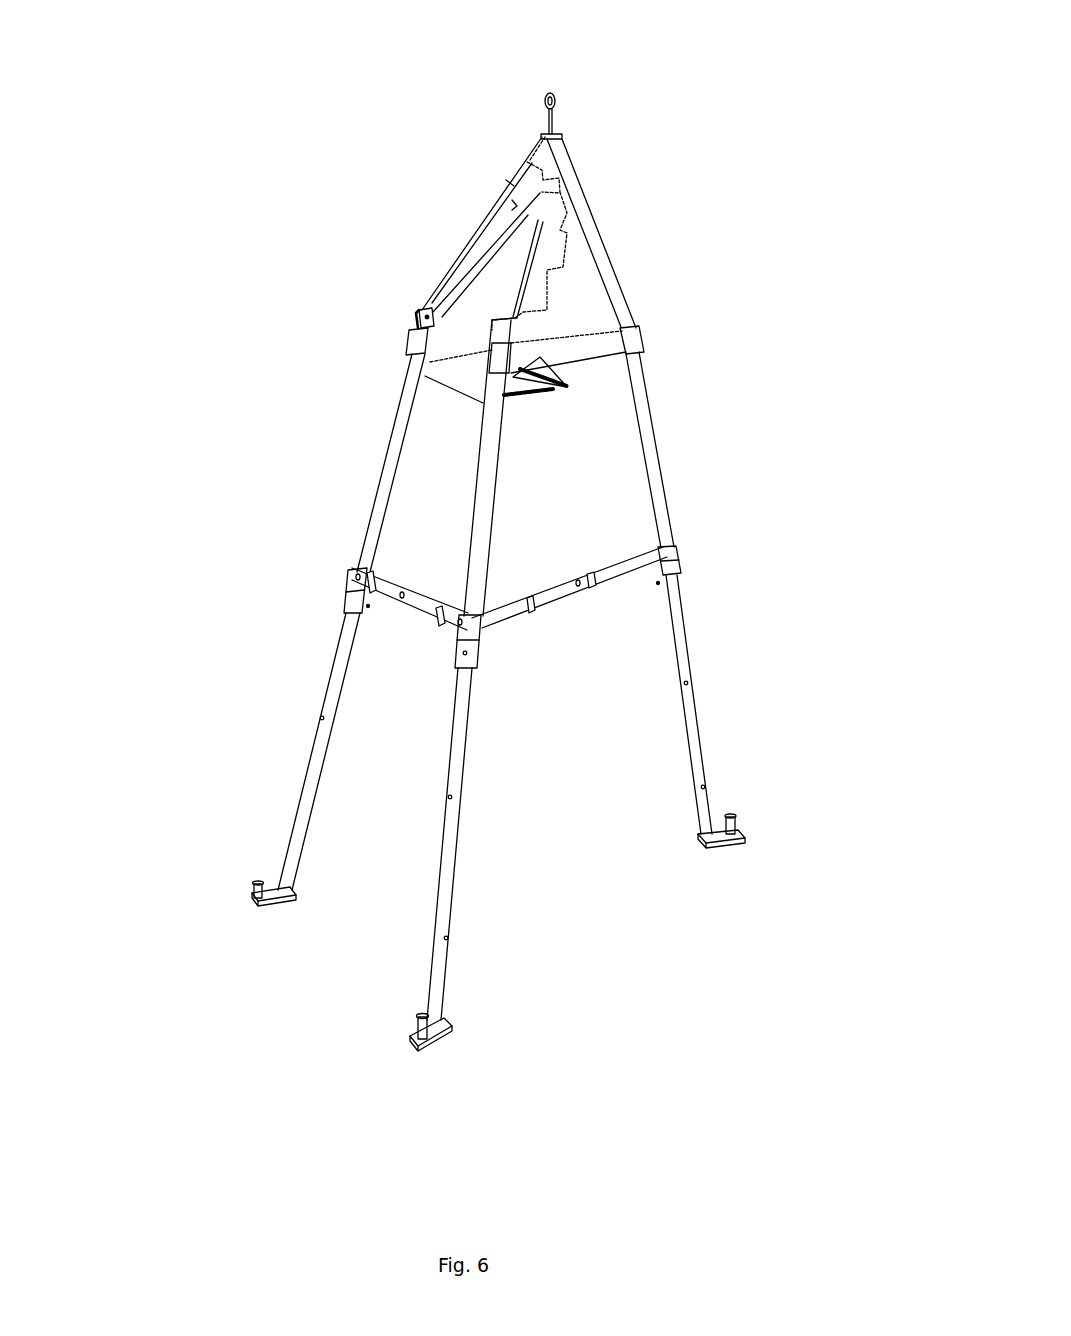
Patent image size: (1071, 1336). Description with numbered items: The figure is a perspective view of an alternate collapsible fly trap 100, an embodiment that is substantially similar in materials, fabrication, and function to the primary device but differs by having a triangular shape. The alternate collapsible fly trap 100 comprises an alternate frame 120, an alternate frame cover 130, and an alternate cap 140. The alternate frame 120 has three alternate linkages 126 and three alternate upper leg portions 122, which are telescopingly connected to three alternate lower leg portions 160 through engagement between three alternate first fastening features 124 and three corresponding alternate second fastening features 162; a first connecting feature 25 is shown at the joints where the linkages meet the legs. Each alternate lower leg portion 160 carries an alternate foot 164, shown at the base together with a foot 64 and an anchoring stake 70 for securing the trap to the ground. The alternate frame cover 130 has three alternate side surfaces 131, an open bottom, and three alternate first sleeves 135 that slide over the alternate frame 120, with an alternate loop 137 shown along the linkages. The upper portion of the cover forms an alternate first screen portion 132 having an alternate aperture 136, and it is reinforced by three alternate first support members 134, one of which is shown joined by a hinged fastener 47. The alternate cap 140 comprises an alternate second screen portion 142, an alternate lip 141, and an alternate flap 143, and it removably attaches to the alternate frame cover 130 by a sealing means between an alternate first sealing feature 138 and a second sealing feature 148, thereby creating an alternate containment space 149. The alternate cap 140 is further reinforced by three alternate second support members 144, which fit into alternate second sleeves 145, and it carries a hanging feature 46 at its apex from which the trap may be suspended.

The alternate collapsible fly trap 100 is at (130, 107).
The hanging feature 46 is at (553, 93).
The alternate cap 140 is at (578, 167).
The alternate second screen portion 142 is at (587, 237).
The alternate aperture 136 is at (530, 163).
The alternate second support member 144 is at (510, 183).
The alternate containment space 149 is at (514, 204).
The alternate first screen portion 132 is at (527, 215).
The alternate first support member 134 is at (523, 278).
The hinged fastener 47 is at (415, 313).
The alternate second sleeve 145 is at (497, 358).
The alternate flap 143 is at (430, 375).
The alternate lip 141 is at (612, 343).
The second sealing feature 148 is at (567, 370).
The alternate first sealing feature 138 is at (567, 392).
The alternate side surface 131 is at (432, 444).
The alternate frame cover 130 is at (210, 473).
The alternate first sleeve 135 is at (357, 565).
The alternate upper leg portion 122 is at (353, 595).
The alternate first fastening feature 124 is at (347, 598).
The first connecting feature 25 is at (369, 608).
The alternate linkage 126 is at (417, 613).
The alternate loop 137 is at (437, 612).
The alternate frame 120 is at (703, 563).
The alternate lower leg portion 160 is at (457, 707).
The alternate second fastening feature 162 is at (446, 938).
The alternate foot 164 is at (268, 898).
The foot 64 is at (253, 908).
The anchoring stake 70 is at (257, 881).